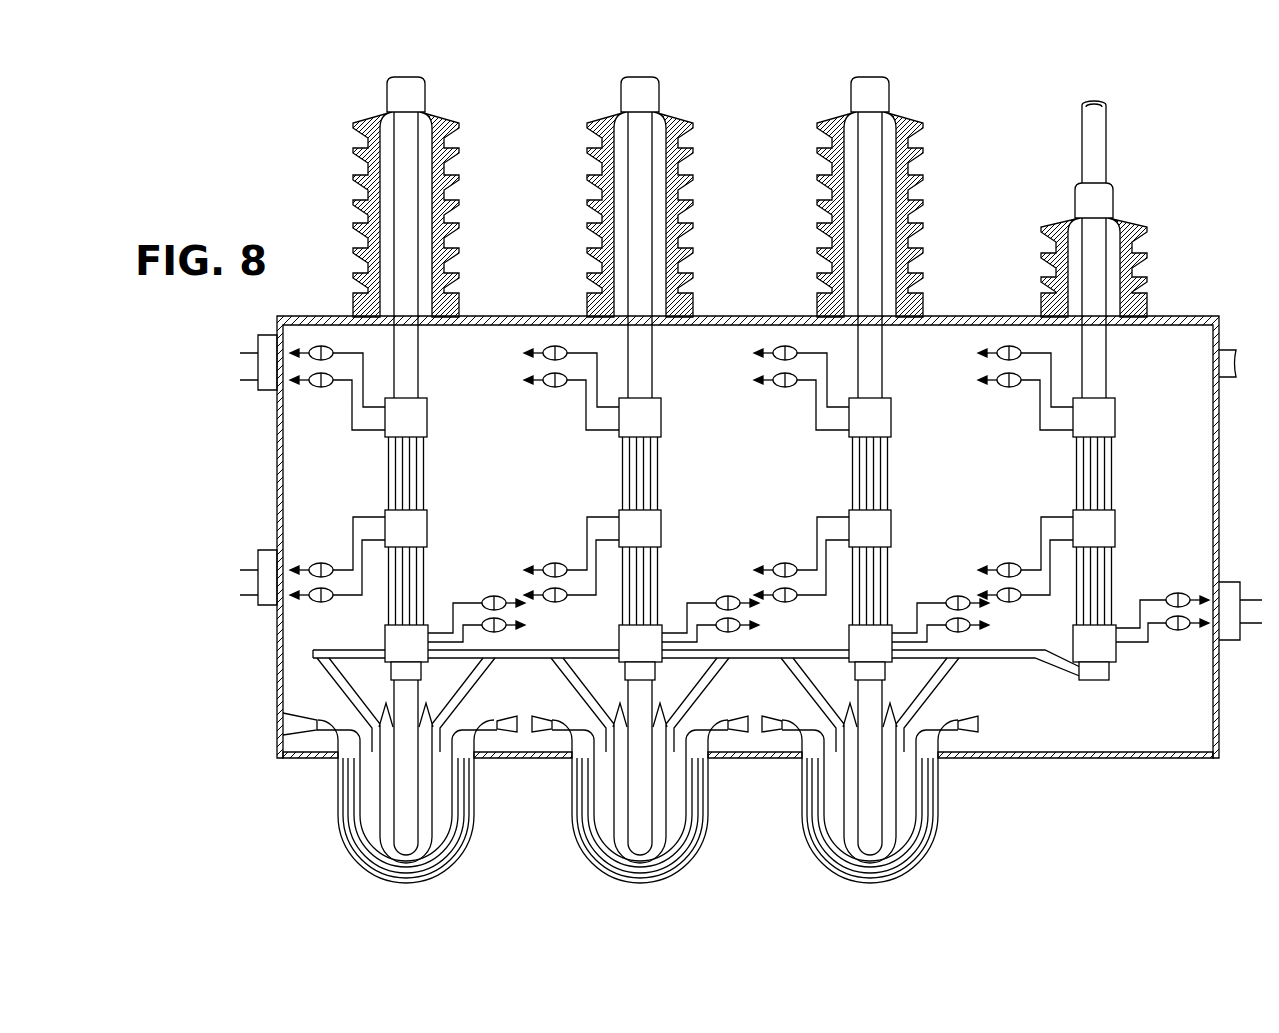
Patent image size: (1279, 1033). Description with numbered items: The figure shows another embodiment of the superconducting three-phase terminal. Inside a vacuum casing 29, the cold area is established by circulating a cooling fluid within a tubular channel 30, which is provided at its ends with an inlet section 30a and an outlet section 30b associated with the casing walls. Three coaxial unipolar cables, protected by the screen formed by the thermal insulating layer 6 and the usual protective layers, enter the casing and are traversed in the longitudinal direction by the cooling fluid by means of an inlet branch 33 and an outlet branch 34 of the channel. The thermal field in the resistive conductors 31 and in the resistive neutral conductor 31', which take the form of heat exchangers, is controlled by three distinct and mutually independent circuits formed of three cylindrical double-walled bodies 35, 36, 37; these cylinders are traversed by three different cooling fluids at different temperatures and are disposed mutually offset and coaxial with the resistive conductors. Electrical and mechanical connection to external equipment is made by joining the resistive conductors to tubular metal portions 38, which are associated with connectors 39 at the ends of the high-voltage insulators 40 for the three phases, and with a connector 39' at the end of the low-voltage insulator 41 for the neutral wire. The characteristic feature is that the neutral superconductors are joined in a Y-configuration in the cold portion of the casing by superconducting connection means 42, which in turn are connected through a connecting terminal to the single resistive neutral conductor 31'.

The thermal insulating layer 6 is at (346, 805).
The vacuum casing 29 is at (1220, 462).
The tubular channel 30 is at (540, 714).
The inlet section 30a is at (968, 718).
The outlet section 30b is at (298, 722).
The resistive conductor 31 is at (671, 531).
The resistive neutral conductor 31' is at (1130, 531).
The inlet branch 33 is at (456, 840).
The outlet branch 34 is at (368, 852).
The cylindrical double-walled body 35 is at (428, 418).
The cylindrical double-walled body 36 is at (388, 515).
The cylindrical double-walled body 37 is at (395, 638).
The tubular metal portion 38 is at (398, 148).
The connector 39 is at (607, 85).
The connector 39' is at (1064, 194).
The high-voltage insulator 40 is at (360, 225).
The low-voltage insulator 41 is at (1120, 225).
The superconducting connection means 42 is at (1040, 662).